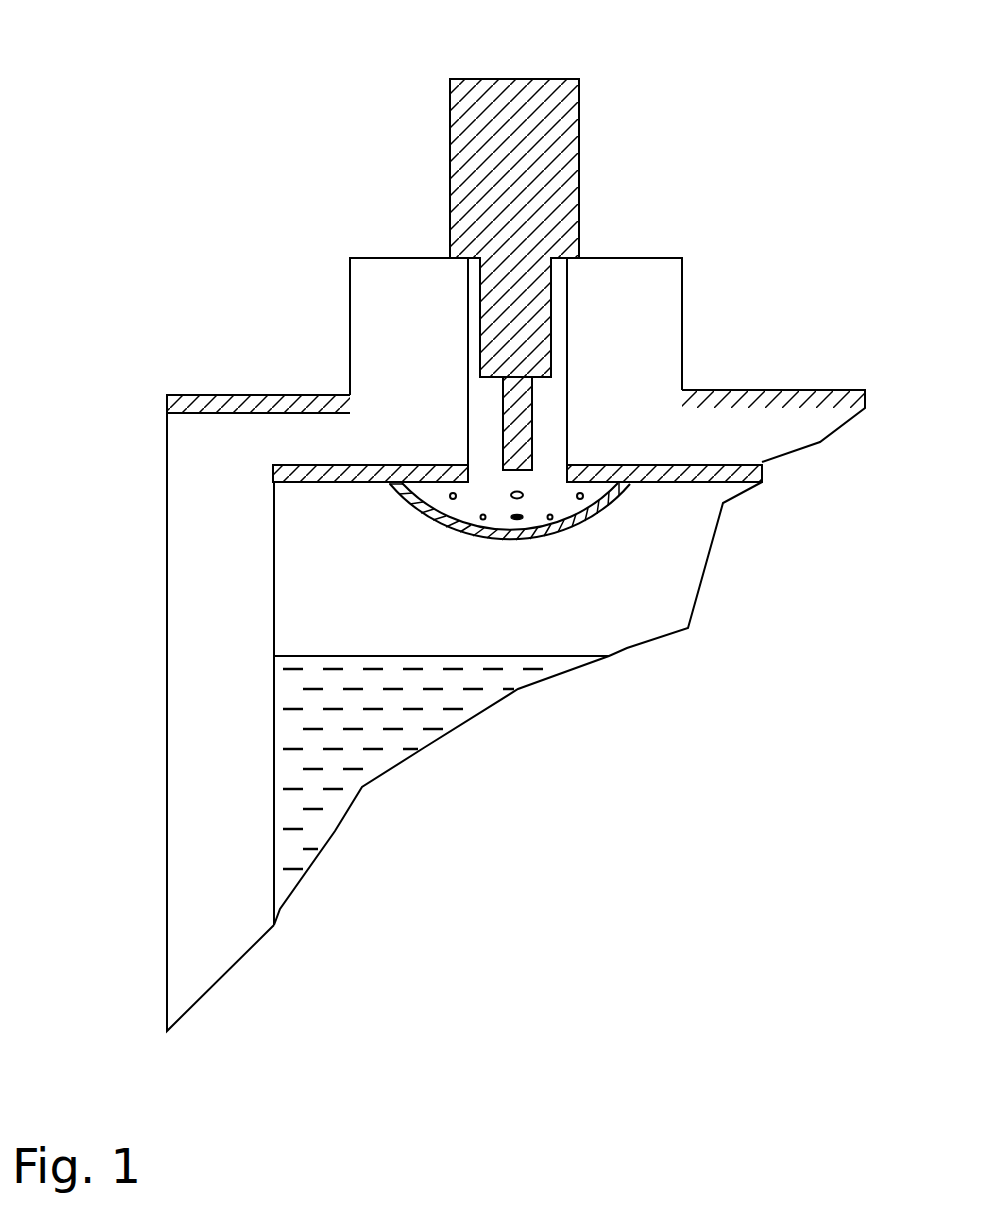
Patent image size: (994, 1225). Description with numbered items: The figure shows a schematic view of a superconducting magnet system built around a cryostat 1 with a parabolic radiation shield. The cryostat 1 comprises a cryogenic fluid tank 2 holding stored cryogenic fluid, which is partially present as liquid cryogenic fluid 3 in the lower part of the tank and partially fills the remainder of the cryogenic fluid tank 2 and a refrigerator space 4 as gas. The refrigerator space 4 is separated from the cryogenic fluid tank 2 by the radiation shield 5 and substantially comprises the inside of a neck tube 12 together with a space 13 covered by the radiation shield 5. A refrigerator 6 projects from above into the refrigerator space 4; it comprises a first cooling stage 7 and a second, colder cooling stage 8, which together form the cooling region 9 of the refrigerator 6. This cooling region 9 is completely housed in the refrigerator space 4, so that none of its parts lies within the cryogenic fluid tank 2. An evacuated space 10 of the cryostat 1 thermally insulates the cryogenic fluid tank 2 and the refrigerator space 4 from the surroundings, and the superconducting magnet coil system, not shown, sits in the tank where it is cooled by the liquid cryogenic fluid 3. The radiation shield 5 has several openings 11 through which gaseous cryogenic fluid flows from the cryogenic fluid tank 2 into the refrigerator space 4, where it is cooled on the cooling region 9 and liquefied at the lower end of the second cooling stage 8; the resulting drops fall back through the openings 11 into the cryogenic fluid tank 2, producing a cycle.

The cryostat 1 is at (203, 292).
The cryogenic fluid tank 2 is at (307, 577).
The liquid cryogenic fluid 3 is at (303, 722).
The refrigerator space 4 is at (545, 410).
The radiation shield 5 is at (593, 518).
The refrigerator 6 is at (608, 130).
The first cooling stage 7 is at (551, 320).
The second cooling stage 8 is at (532, 428).
The cooling region 9 is at (457, 467).
The evacuated space 10 is at (225, 477).
The openings 11 is at (463, 522).
The neck tube 12 is at (567, 352).
The space covered by the radiation shield 13 is at (535, 500).